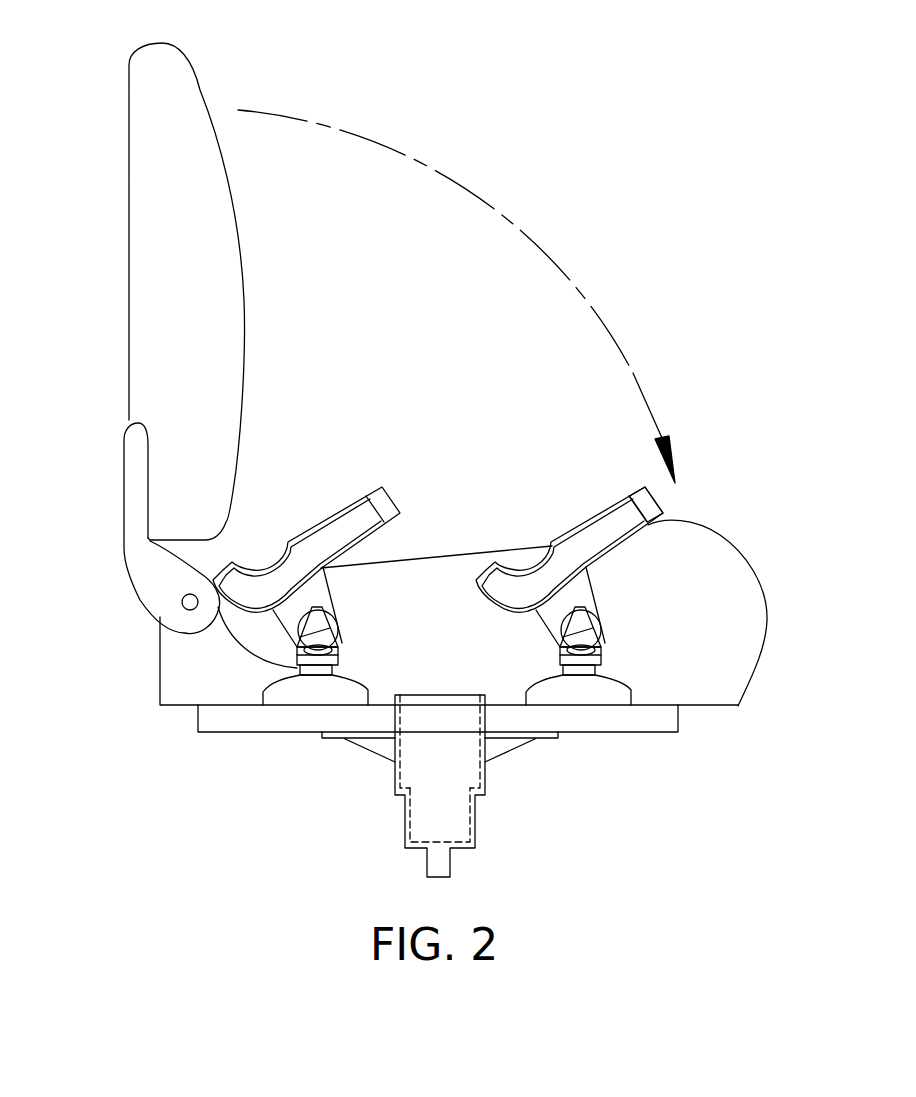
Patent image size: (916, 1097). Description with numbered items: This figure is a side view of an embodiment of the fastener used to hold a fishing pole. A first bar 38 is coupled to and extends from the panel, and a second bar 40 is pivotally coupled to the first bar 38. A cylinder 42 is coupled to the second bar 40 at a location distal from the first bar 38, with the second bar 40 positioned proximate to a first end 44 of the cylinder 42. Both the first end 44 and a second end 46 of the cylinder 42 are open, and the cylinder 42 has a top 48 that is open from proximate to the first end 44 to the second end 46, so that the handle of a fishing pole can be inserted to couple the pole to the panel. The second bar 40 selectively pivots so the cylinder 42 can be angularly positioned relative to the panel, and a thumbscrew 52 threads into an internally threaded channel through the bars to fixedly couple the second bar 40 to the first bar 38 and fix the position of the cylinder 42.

The first bar 38 is at (600, 655).
The second bar 40 is at (578, 597).
The cylinder 42 is at (647, 510).
The first end 44 is at (512, 593).
The second end 46 is at (409, 490).
The top 48 is at (595, 513).
The thumbscrew 52 is at (312, 637).